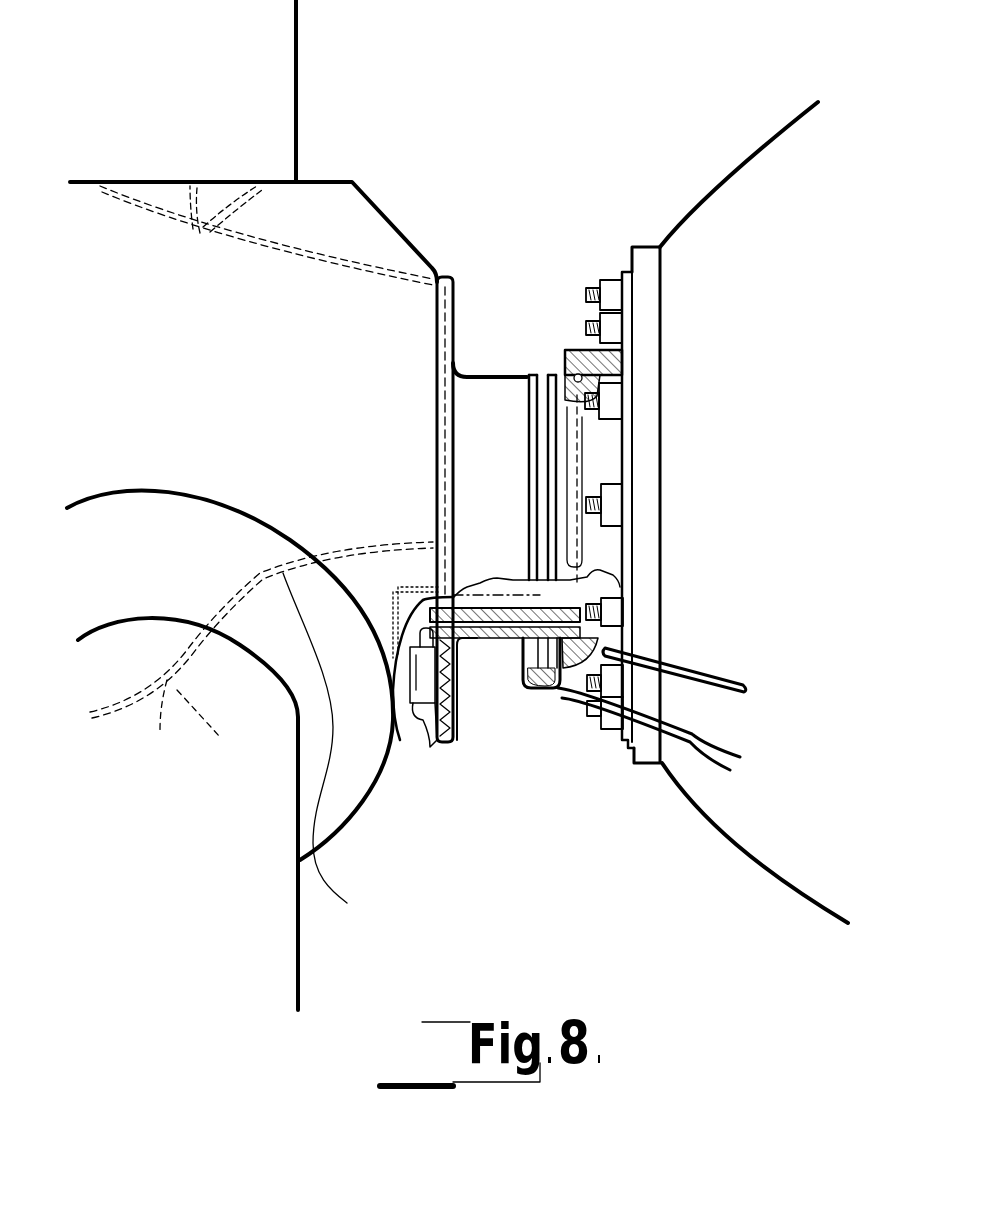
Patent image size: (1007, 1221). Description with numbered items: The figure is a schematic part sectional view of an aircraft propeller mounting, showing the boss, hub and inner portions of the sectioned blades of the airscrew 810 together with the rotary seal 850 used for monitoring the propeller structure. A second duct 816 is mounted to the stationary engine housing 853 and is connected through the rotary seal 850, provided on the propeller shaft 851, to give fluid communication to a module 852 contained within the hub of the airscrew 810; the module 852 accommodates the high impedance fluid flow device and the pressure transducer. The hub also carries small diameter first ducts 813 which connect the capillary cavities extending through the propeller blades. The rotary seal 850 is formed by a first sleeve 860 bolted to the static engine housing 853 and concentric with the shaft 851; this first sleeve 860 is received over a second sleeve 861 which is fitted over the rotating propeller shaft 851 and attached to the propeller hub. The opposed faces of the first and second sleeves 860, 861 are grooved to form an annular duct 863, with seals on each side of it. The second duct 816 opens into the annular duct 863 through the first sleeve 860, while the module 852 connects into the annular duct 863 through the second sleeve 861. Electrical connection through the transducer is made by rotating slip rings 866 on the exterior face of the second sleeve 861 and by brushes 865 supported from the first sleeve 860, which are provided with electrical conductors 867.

The airscrew 810 is at (313, 181).
The first ducts 813 is at (337, 267).
The rotary seal 850 is at (547, 343).
The propeller shaft 851 is at (523, 602).
The module 852 is at (420, 712).
The engine housing 853 is at (745, 160).
The first sleeve 860 is at (550, 340).
The second sleeve 861 is at (470, 640).
The annular duct 863 is at (608, 358).
The brushes 865 is at (560, 690).
The slip rings 866 is at (533, 372).
The second duct 816 is at (706, 675).
The electrical conductors 867 is at (695, 731).